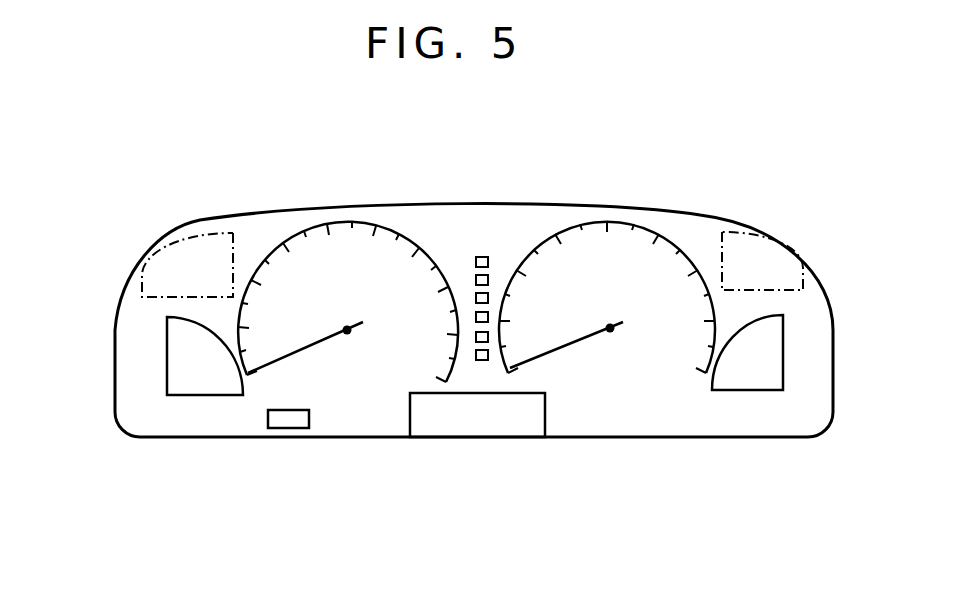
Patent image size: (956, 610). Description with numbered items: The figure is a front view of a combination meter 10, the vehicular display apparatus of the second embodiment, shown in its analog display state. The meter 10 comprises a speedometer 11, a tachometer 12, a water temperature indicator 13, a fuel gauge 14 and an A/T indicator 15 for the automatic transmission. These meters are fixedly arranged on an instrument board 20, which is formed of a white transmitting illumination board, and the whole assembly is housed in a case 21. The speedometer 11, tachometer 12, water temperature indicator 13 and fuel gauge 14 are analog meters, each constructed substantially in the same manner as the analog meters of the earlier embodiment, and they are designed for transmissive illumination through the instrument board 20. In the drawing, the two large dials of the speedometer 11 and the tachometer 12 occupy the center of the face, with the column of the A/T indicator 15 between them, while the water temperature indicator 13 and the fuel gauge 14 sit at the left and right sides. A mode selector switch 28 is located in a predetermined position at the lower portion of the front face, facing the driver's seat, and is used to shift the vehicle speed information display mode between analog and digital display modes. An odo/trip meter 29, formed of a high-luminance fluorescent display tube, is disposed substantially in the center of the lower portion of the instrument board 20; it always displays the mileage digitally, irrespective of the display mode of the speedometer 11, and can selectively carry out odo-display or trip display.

The combination meter 10 is at (152, 199).
The case 21 is at (280, 215).
The speedometer 11 is at (365, 290).
The tachometer 12 is at (618, 272).
The A/T indicator 15 is at (493, 256).
The water temperature indicator 13 is at (203, 385).
The fuel gauge 14 is at (753, 380).
The instrument board 20 is at (368, 422).
The mode selector switch 28 is at (290, 428).
The odo/trip meter 29 is at (498, 423).